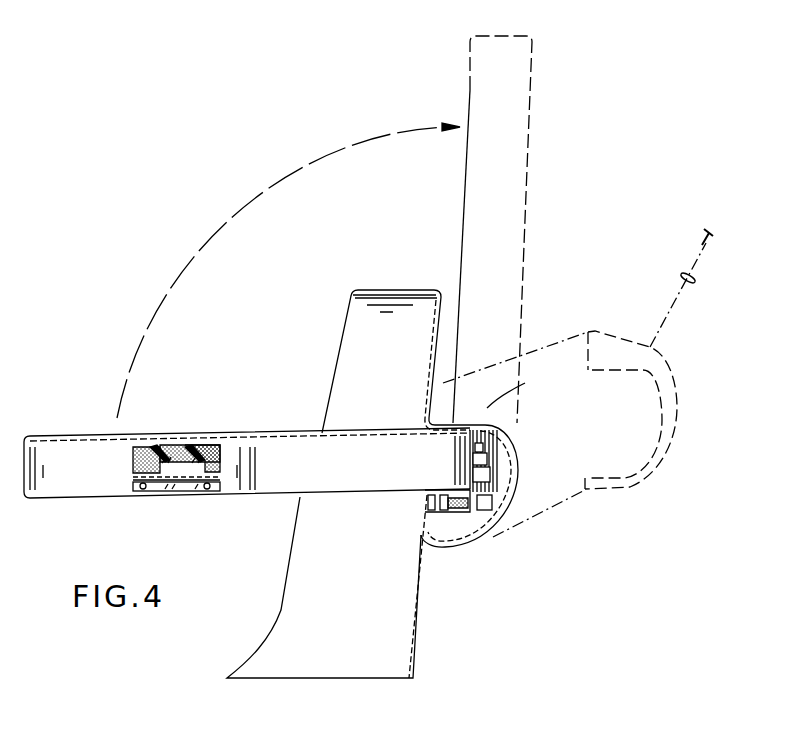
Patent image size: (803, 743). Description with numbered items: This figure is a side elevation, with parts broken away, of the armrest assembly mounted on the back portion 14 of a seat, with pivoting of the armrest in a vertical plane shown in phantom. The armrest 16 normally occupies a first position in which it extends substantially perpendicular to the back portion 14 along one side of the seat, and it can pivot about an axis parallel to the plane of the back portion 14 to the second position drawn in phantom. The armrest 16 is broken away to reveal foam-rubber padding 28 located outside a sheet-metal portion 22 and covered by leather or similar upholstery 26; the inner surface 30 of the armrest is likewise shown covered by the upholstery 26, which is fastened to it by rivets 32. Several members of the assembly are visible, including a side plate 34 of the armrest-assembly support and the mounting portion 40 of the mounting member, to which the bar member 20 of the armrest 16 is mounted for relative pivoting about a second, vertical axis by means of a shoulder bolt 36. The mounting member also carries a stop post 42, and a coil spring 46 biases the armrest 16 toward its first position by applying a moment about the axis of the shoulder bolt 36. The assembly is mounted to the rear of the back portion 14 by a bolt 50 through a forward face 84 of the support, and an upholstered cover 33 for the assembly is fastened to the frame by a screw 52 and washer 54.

The back portion 14 is at (390, 290).
The armrest 16 is at (468, 90).
The bar member 20 is at (175, 447).
The sheet-metal portion 22 is at (153, 478).
The upholstery 26 is at (145, 447).
The foam-rubber padding 28 is at (203, 447).
The inner surface 30 is at (180, 487).
The rivets 32 is at (210, 489).
The cover 33 is at (684, 352).
The side plate 34 is at (485, 437).
The shoulder bolt 36 is at (481, 447).
The mounting portion 40 is at (481, 475).
The stop post 42 is at (483, 503).
The coil spring 46 is at (468, 513).
The bolt 50 is at (438, 512).
The screw 52 is at (712, 242).
The washer 54 is at (698, 283).
The forward face 84 is at (428, 512).